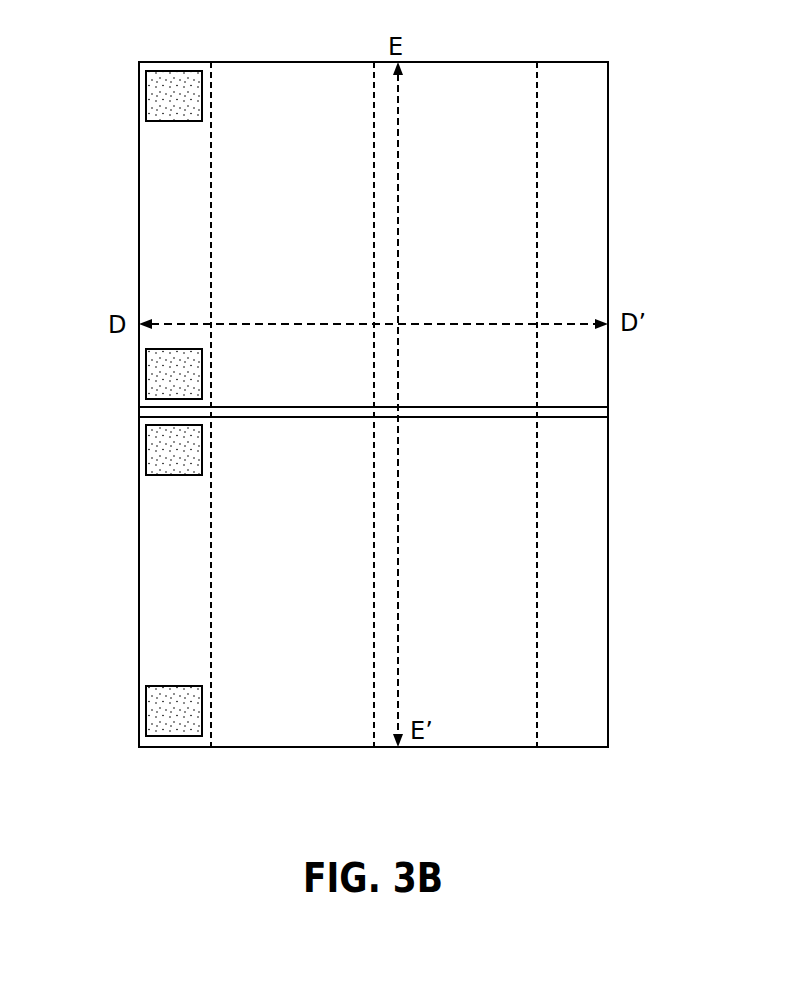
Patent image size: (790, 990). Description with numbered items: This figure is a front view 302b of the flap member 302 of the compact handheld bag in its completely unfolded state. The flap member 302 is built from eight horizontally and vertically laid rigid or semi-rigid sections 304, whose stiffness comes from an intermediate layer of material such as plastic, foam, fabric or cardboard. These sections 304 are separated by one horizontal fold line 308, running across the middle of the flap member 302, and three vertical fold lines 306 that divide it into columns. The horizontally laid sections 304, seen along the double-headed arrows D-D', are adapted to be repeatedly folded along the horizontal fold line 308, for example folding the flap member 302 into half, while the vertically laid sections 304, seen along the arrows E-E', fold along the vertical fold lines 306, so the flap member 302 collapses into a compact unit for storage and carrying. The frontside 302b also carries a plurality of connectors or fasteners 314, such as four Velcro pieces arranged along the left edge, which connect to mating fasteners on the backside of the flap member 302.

The flap member 302 is at (608, 262).
The frontside of the flap member 302b is at (410, 115).
The horizontally and vertically laid rigid or semi-rigid sections 304 is at (199, 255).
The vertical fold lines 306 is at (211, 177).
The horizontal fold line 308 is at (330, 408).
The connectors or fasteners 314 is at (158, 100).